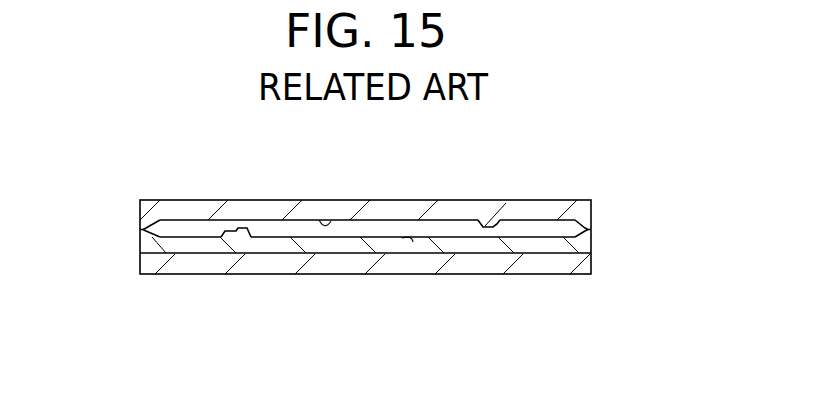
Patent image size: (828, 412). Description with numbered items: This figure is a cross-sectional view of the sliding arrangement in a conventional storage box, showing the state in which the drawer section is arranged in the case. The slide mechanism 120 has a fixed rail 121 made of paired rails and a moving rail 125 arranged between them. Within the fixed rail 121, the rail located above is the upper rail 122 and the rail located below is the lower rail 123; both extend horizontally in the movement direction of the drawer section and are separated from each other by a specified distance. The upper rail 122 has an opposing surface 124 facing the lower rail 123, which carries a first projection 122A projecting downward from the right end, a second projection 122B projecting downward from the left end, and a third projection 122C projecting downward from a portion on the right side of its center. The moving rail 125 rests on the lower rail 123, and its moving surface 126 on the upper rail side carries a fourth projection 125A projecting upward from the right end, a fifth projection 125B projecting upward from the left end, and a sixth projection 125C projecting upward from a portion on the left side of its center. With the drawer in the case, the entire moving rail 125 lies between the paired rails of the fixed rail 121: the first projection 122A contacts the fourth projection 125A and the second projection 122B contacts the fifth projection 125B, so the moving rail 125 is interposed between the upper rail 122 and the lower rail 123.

The slide mechanism 120 is at (623, 168).
The fixed rail 121 is at (365, 254).
The upper rail 122 is at (211, 199).
The first projection 122A is at (594, 229).
The second projection 122B is at (140, 228).
The third projection 122C is at (499, 221).
The lower rail 123 is at (280, 275).
The opposing surface 124 is at (325, 219).
The moving rail 125 is at (351, 251).
The fourth projection 125A is at (594, 231).
The fifth projection 125B is at (140, 231).
The sixth projection 125C is at (221, 239).
The moving surface 126 is at (413, 242).